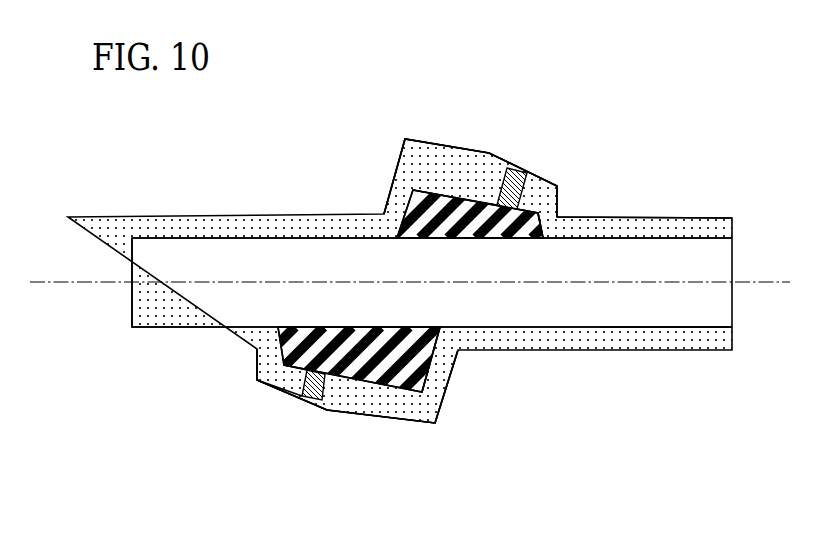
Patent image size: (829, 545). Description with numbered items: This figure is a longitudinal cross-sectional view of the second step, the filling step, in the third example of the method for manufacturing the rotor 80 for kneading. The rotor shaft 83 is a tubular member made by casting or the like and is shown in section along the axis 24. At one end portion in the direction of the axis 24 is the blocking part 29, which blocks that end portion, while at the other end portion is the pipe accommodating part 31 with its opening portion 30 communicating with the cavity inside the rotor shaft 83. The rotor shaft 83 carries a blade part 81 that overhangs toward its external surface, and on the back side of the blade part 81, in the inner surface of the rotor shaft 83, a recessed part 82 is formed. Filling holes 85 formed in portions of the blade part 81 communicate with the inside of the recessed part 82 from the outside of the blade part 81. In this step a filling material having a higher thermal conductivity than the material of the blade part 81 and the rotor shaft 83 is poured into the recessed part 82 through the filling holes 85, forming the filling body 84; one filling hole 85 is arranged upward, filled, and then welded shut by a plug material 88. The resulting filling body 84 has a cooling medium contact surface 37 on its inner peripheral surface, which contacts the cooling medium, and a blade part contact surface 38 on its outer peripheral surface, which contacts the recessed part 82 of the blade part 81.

The axis 24 is at (40, 280).
The blocking part 29 is at (146, 312).
The opening portion 30 is at (725, 340).
The pipe accommodating part 31 is at (697, 328).
The cooling medium contact surface 37 is at (517, 238).
The blade part contact surface 38 is at (538, 213).
The rotor for kneading 80 is at (639, 197).
The blade part 81 is at (470, 157).
The recessed part 82 is at (452, 196).
The rotor shaft 83 is at (712, 217).
The filling body 84 is at (478, 202).
The filling holes 85 is at (537, 188).
The plug material 88 is at (515, 170).